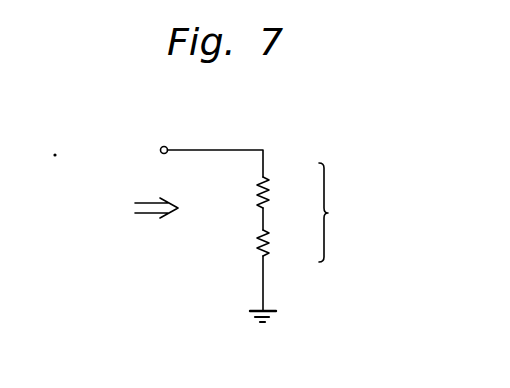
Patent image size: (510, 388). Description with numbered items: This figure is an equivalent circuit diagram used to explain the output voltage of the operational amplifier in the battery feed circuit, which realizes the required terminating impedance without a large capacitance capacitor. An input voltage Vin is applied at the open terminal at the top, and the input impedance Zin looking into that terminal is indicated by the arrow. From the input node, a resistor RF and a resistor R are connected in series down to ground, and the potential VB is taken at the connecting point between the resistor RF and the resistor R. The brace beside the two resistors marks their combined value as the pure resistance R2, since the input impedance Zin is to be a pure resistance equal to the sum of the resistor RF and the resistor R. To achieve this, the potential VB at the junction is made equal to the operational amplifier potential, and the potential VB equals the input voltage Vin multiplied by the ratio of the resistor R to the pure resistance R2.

The input voltage Vin is at (188, 157).
The input impedance Zin is at (131, 210).
The resistor R_F RF is at (239, 193).
The potential at connecting point VB is at (282, 220).
The resistor R'' R is at (232, 238).
The pure resistance R/2 R2 is at (357, 200).